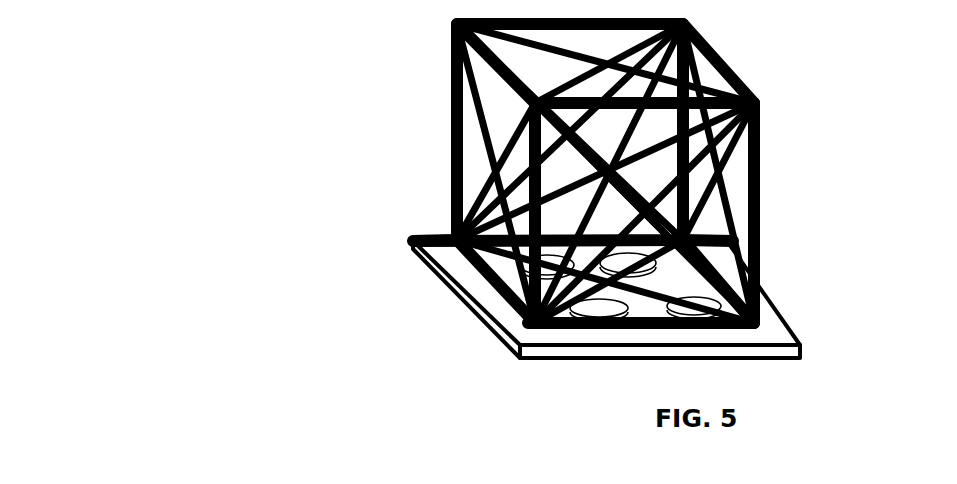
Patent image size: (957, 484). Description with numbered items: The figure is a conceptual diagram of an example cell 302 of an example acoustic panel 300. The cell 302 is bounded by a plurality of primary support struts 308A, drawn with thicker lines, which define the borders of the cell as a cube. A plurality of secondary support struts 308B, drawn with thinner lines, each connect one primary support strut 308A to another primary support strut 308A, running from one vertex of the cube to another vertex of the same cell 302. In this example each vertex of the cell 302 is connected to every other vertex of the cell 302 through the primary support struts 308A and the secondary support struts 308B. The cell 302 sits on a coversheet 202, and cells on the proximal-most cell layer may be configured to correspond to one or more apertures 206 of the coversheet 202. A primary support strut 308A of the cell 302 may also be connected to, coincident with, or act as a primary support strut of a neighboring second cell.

The acoustic panel 300 is at (238, 441).
The cell 302 is at (218, 54).
The coversheet 202 is at (790, 331).
The apertures 206 is at (618, 300).
The primary support struts 308A is at (713, 48).
The secondary support struts 308B is at (763, 220).